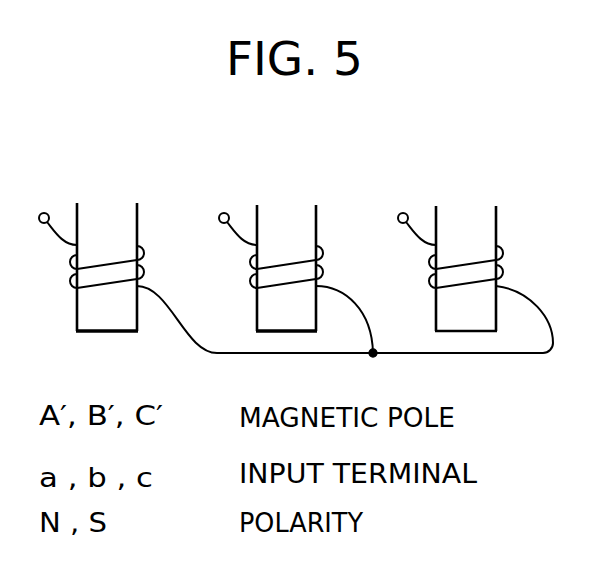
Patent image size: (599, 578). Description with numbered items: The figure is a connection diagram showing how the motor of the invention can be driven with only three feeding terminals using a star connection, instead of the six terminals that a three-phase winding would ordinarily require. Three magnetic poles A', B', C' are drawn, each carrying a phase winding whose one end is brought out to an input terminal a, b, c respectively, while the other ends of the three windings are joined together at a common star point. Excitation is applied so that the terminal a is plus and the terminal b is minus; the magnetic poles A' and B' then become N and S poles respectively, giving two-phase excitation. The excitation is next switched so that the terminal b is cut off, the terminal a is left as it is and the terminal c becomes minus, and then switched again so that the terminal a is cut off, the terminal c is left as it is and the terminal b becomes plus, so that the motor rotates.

The magnetic pole A' is at (143, 275).
The magnetic pole B' is at (311, 275).
The magnetic pole C' is at (491, 275).
The terminal a is at (57, 210).
The terminal b is at (236, 210).
The terminal c is at (416, 210).
The N pole N is at (107, 312).
The S pole S is at (286, 312).